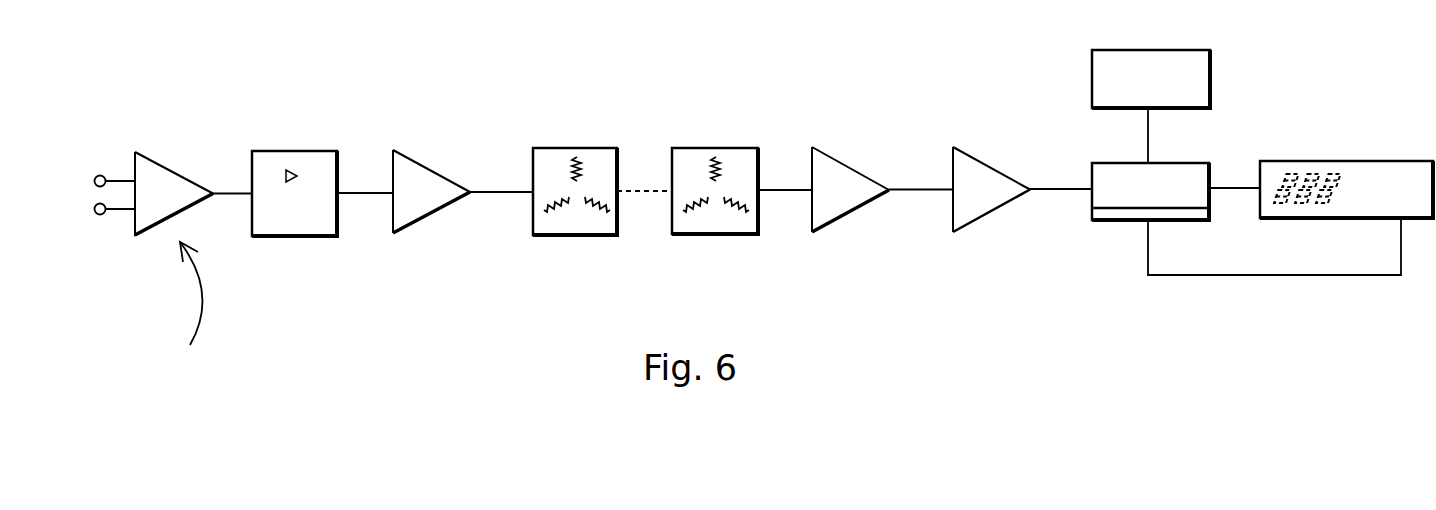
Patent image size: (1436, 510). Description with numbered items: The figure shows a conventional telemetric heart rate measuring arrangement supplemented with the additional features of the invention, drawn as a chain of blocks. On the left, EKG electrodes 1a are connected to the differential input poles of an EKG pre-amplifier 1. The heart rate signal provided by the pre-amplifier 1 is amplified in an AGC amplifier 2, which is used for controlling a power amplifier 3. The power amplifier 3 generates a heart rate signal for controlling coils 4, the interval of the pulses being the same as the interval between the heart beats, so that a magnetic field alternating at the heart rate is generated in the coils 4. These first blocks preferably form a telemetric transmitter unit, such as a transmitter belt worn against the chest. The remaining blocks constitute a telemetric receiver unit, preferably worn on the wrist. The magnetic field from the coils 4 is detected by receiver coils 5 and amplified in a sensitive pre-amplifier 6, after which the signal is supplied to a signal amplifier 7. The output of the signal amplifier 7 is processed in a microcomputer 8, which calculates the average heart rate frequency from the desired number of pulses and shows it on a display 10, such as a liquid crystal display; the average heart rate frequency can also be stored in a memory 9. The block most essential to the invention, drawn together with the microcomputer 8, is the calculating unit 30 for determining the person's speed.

The EKG pre-amplifier 1 is at (168, 168).
The EKG electrodes 1a is at (186, 310).
The AGC amplifier 2 is at (295, 151).
The power amplifier 3 is at (435, 172).
The coils 4 is at (553, 148).
The receiver coils 5 is at (693, 148).
The sensitive pre-amplifier 6 is at (857, 170).
The signal amplifier 7 is at (980, 158).
The microcomputer 8 is at (1147, 198).
The memory 9 is at (1167, 50).
The display 10 is at (1357, 161).
The calculating unit 30 is at (1119, 213).